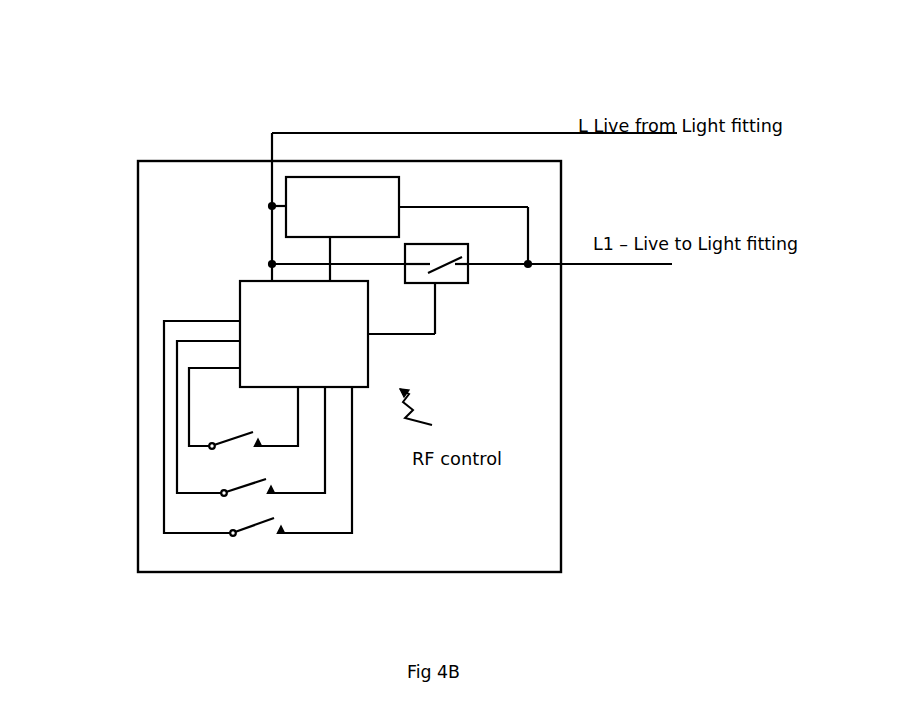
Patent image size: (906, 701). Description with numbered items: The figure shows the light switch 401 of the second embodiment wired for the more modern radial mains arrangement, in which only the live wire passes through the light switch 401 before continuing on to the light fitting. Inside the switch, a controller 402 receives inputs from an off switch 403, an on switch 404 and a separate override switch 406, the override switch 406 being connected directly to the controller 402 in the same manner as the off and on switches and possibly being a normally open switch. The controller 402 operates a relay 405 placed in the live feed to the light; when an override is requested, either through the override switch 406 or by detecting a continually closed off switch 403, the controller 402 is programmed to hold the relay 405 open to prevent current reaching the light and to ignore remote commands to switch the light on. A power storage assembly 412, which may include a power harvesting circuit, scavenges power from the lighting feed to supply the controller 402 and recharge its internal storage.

The light switch 401 is at (172, 146).
The controller 402 is at (257, 302).
The off switch 403 is at (238, 447).
The on switch 404 is at (250, 493).
The relay 405 is at (447, 257).
The override switch 406 is at (255, 530).
The power storage assembly 412 is at (380, 193).